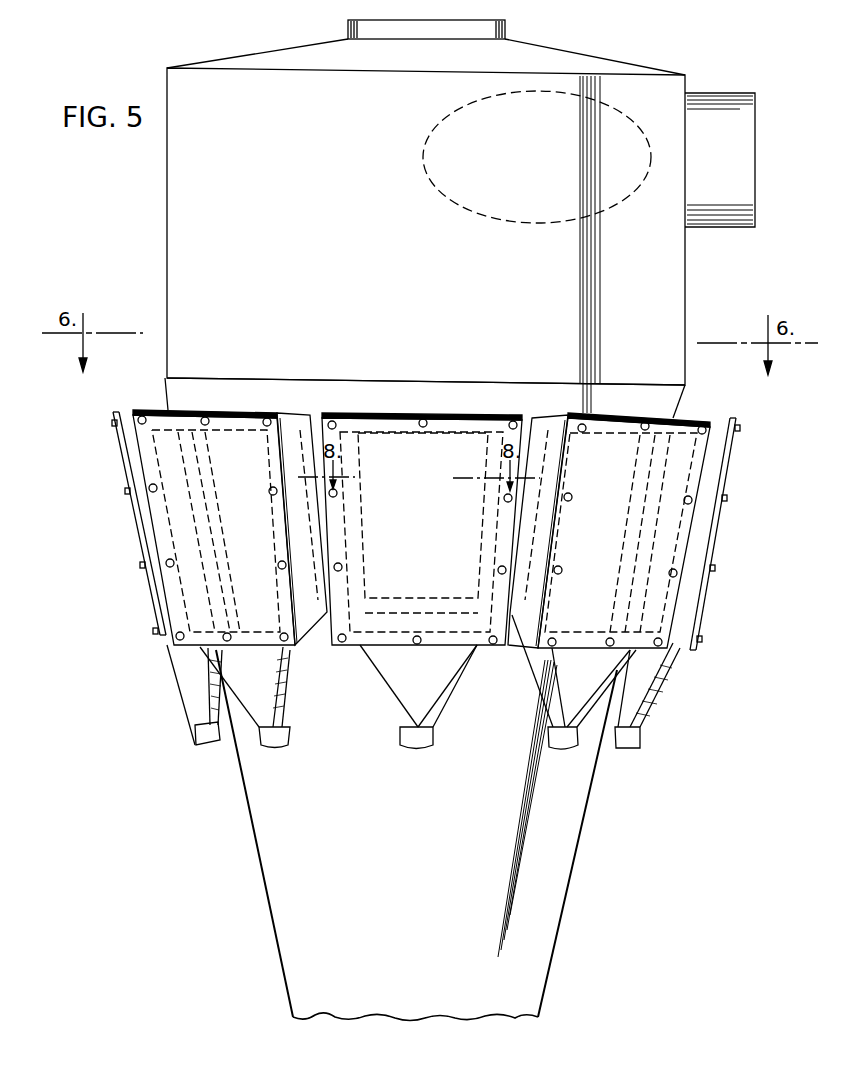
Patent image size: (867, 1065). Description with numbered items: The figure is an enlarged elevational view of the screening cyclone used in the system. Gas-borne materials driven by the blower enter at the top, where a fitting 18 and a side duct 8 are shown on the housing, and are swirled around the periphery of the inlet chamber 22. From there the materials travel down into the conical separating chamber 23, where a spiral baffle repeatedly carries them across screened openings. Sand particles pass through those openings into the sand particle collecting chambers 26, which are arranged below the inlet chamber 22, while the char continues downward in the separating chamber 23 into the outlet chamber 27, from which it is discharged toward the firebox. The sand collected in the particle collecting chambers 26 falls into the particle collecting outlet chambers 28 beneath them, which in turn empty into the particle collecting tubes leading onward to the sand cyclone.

The inlet cap 18 is at (506, 30).
The inlet chamber 22 is at (378, 237).
The outlet duct 8 is at (747, 163).
The conical separating chamber 23 is at (408, 388).
The sand particle collecting chamber 26 is at (180, 527).
The particle collecting outlet chamber 28 is at (190, 660).
The outlet chamber 27 is at (414, 857).